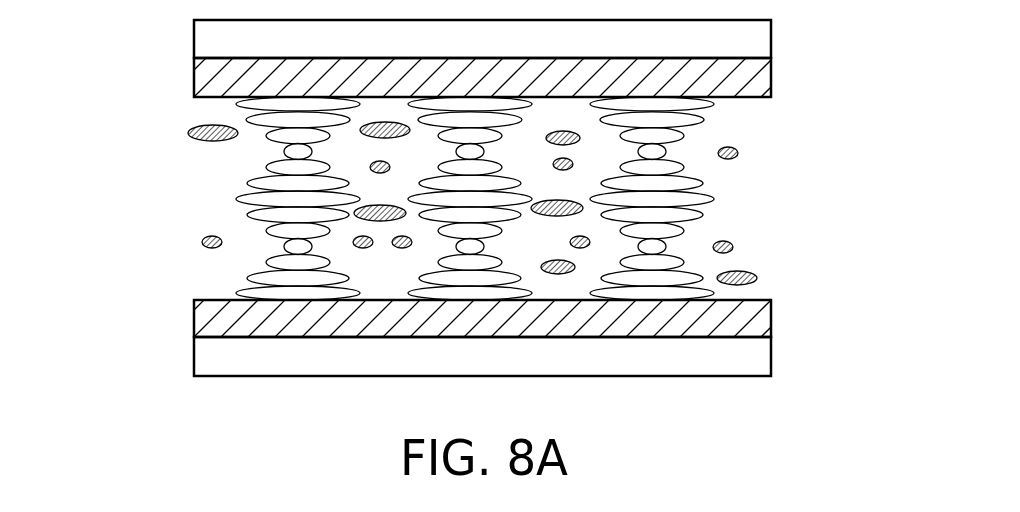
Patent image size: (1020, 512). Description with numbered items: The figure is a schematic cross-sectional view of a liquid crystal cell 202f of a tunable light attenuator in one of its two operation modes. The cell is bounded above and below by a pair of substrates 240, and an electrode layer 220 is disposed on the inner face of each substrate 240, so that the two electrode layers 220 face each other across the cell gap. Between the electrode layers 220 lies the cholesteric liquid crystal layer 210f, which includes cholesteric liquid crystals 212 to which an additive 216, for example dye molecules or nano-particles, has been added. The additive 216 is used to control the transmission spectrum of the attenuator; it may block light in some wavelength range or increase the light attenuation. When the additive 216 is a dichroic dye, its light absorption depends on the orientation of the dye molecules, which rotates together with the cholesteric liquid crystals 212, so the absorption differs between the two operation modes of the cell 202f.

The liquid crystal cell 202f is at (473, 221).
The cholesteric liquid crystal layer 210f is at (389, 186).
The cholesteric liquid crystals 212 is at (273, 120).
The additive 216 is at (188, 134).
The electrode layer 220 is at (752, 78).
The substrate 240 is at (752, 41).